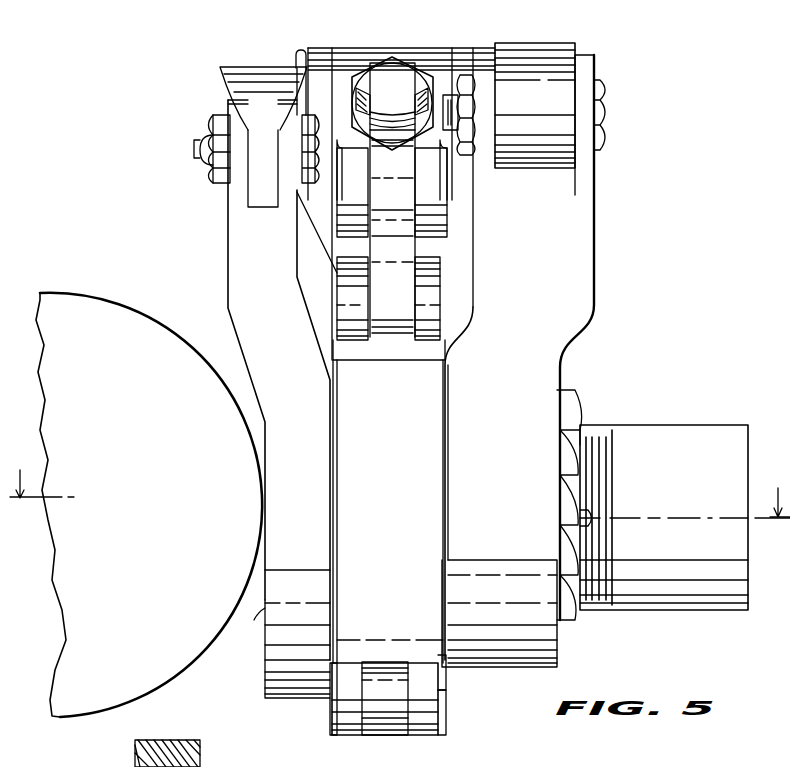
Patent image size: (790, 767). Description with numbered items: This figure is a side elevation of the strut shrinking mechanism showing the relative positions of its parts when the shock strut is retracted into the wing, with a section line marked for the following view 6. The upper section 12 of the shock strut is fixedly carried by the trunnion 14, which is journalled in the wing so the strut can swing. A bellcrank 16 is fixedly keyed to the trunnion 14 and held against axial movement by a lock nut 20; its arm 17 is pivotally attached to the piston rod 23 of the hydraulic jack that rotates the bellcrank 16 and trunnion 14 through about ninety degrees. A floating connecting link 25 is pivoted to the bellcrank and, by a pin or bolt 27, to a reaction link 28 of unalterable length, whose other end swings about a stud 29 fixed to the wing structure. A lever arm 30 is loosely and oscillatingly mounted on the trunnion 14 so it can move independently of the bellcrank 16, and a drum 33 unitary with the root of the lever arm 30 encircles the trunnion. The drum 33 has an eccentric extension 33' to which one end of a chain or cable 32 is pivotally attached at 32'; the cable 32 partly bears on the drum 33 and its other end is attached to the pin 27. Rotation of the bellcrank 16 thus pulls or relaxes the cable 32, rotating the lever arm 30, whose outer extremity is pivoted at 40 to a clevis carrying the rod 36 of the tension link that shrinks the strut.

The outer cylinder or upper section 12 is at (125, 315).
The trunnion 14 is at (687, 437).
The bellcrank 16 is at (494, 645).
The arm 17 is at (572, 225).
The lock nut 20 is at (575, 413).
The piston rod 23 is at (575, 68).
The connecting link 25 is at (323, 58).
The pin or bolt 27 is at (300, 50).
The reaction link 28 is at (390, 75).
The stud 29 is at (425, 90).
The lever arm 30 is at (238, 258).
The chain or cable 32 is at (418, 451).
The pivotal attachment 32' is at (292, 648).
The drum 33 is at (362, 711).
The eccentric extension 33' is at (456, 718).
The rod 36 is at (253, 75).
The pivot 40 is at (208, 138).
The section line for FIG. 6 is at (400, 506).